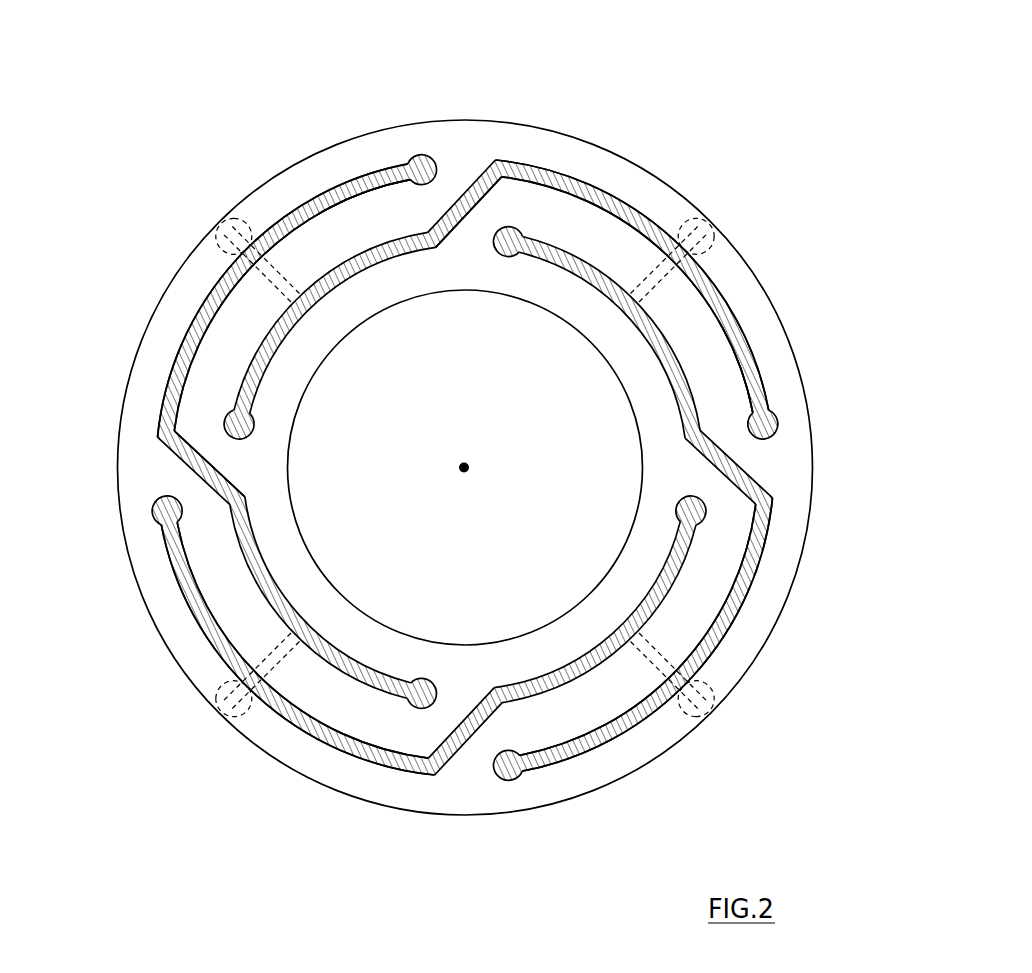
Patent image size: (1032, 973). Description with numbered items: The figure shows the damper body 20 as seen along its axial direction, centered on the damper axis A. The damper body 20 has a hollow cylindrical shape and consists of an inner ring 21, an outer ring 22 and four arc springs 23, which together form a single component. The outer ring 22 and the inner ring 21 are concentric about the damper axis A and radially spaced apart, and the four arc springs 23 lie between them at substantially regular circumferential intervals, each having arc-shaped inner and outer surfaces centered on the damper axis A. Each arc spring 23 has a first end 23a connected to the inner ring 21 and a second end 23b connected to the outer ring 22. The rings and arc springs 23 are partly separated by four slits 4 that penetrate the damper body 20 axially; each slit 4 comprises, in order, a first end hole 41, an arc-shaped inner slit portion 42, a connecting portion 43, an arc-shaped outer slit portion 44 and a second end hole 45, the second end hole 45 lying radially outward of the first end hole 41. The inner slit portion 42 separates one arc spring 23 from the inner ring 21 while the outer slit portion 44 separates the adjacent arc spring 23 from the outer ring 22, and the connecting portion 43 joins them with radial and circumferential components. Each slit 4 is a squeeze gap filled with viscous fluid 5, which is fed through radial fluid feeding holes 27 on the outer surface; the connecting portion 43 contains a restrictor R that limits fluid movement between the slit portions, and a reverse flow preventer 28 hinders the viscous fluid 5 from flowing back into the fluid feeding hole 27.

The damper body 20 is at (474, 467).
The inner ring 21 is at (393, 297).
The outer ring 22 is at (322, 154).
The arc spring 23 is at (222, 341).
The first end 23a is at (488, 200).
The second end 23b is at (441, 169).
The fluid feeding hole 27 is at (243, 192).
The reverse flow preventer 28 is at (232, 230).
The slit 4 is at (560, 172).
The viscous fluid 5 is at (310, 196).
The first end hole 41 is at (252, 430).
The inner slit portion 42 is at (280, 344).
The connecting portion 43 is at (492, 162).
The outer slit portion 44 is at (598, 186).
The second end hole 45 is at (413, 158).
The damper axis A is at (468, 466).
The restrictor R is at (468, 241).